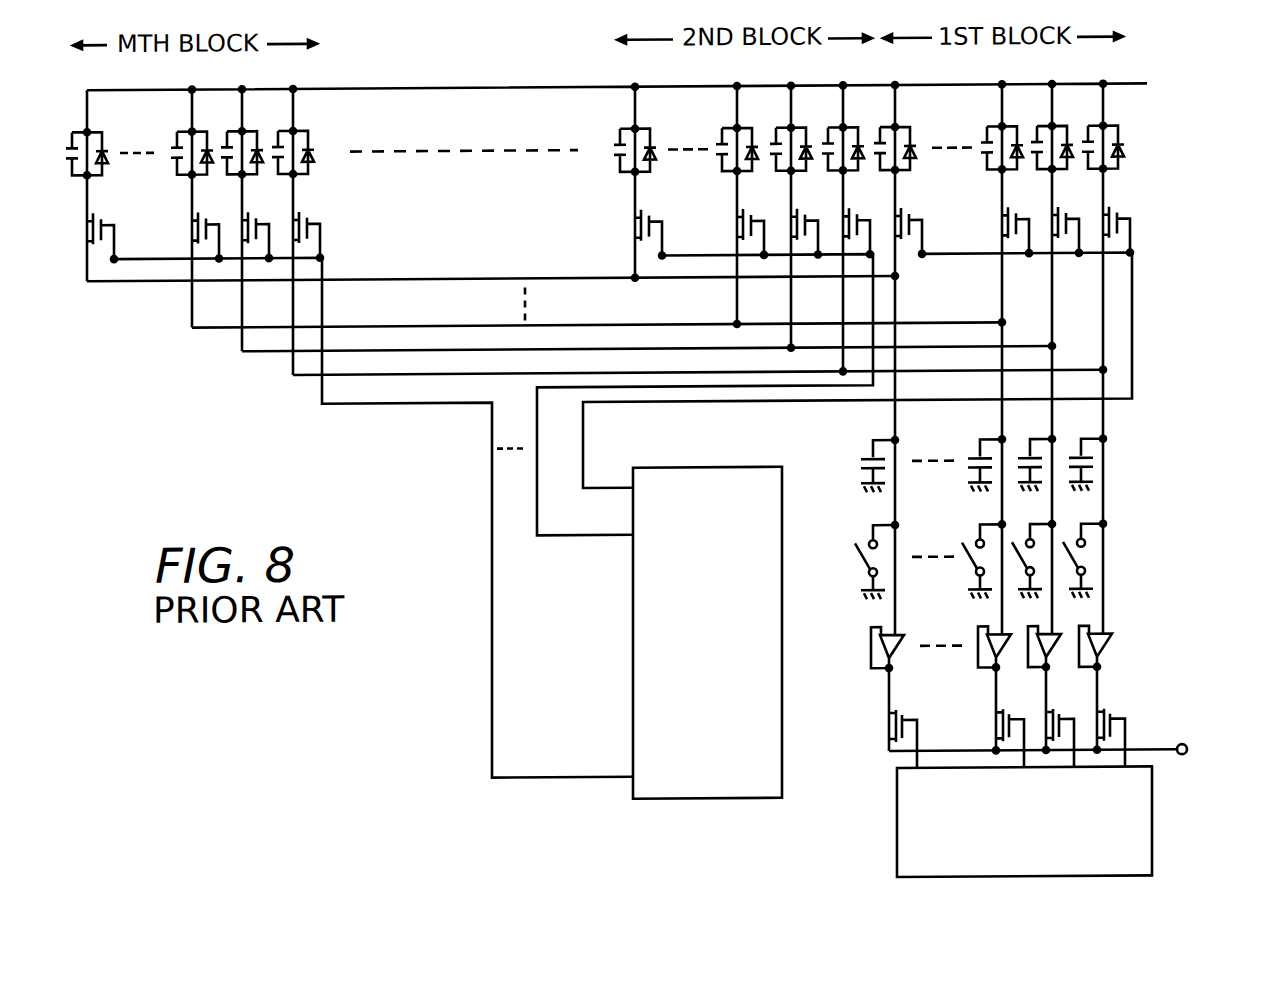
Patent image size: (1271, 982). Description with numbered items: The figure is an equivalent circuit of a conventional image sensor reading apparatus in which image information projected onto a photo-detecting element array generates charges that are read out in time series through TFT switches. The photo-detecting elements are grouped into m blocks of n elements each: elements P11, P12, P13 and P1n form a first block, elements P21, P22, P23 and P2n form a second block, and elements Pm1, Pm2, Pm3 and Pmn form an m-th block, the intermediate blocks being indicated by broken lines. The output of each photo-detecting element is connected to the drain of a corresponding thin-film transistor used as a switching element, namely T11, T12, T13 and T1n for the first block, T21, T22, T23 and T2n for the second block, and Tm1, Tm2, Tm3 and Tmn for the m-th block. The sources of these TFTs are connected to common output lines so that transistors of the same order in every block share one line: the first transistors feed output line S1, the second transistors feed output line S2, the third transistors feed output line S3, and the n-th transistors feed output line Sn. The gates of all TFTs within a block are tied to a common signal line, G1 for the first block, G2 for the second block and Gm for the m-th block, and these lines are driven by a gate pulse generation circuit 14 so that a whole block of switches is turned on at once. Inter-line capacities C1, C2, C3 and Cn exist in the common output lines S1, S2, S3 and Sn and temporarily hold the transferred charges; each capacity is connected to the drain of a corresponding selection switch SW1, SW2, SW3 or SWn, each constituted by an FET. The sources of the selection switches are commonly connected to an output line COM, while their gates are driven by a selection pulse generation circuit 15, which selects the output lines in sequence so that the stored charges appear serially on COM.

The photo-detecting element Pmn is at (106, 138).
The photo-detecting element Pm3 is at (213, 104).
The photo-detecting element Pm2 is at (263, 106).
The photo-detecting element Pm1 is at (315, 138).
The photo-detecting element P2n is at (660, 106).
The photo-detecting element P23 is at (767, 102).
The photo-detecting element P22 is at (817, 100).
The photo-detecting element P21 is at (867, 100).
The photo-detecting element P1n is at (910, 134).
The photo-detecting element P13 is at (1023, 98).
The photo-detecting element P12 is at (1077, 100).
The photo-detecting element P11 is at (1118, 132).
The TFT switching element Tmn is at (118, 223).
The TFT switching element Tm3 is at (213, 189).
The TFT switching element Tm2 is at (267, 188).
The TFT switching element Tm1 is at (325, 223).
The TFT switching element T2n is at (663, 189).
The TFT switching element T23 is at (763, 189).
The TFT switching element T22 is at (816, 219).
The TFT switching element T21 is at (869, 220).
The TFT switching element T1n is at (922, 220).
The TFT switching element T13 is at (1027, 219).
The TFT switching element T12 is at (1077, 219).
The TFT switching element T11 is at (1129, 218).
The common output line Sn is at (511, 287).
The common output line S3 is at (597, 309).
The common output line S2 is at (647, 335).
The common output line S1 is at (698, 357).
The common signal line Gm is at (373, 518).
The common signal line G2 is at (705, 394).
The common signal line G1 is at (857, 370).
The gate pulse generation circuit 14 is at (723, 466).
The inter-line capacity Cn is at (878, 451).
The inter-line capacity C3 is at (983, 450).
The inter-line capacity C2 is at (1036, 450).
The inter-line capacity C1 is at (1087, 450).
The selection switch SWn is at (919, 723).
The selection switch SW3 is at (1013, 682).
The selection switch SW2 is at (1067, 683).
The selection switch SW1 is at (1128, 721).
The output line COM is at (1073, 752).
The selection pulse generation circuit 15 is at (1152, 815).